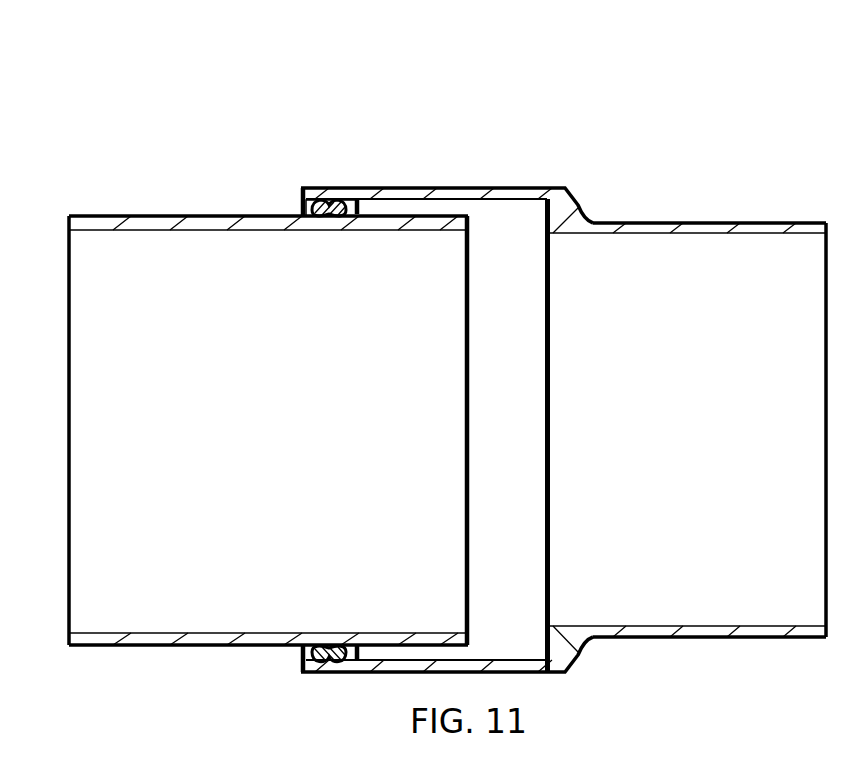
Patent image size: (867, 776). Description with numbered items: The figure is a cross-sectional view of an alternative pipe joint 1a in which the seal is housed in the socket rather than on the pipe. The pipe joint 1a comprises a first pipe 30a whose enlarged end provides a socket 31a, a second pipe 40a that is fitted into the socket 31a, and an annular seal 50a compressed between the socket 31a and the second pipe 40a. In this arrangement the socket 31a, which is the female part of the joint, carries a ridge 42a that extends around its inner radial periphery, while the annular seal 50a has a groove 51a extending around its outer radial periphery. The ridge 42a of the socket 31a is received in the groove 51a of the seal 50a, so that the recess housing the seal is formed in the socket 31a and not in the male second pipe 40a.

The pipe joint 1a is at (455, 341).
The first pipe 30a is at (735, 222).
The socket 31a is at (497, 659).
The second pipe 40a is at (203, 215).
The ridge 42a is at (327, 213).
The annular seal 50a is at (332, 648).
The groove 51a is at (333, 203).